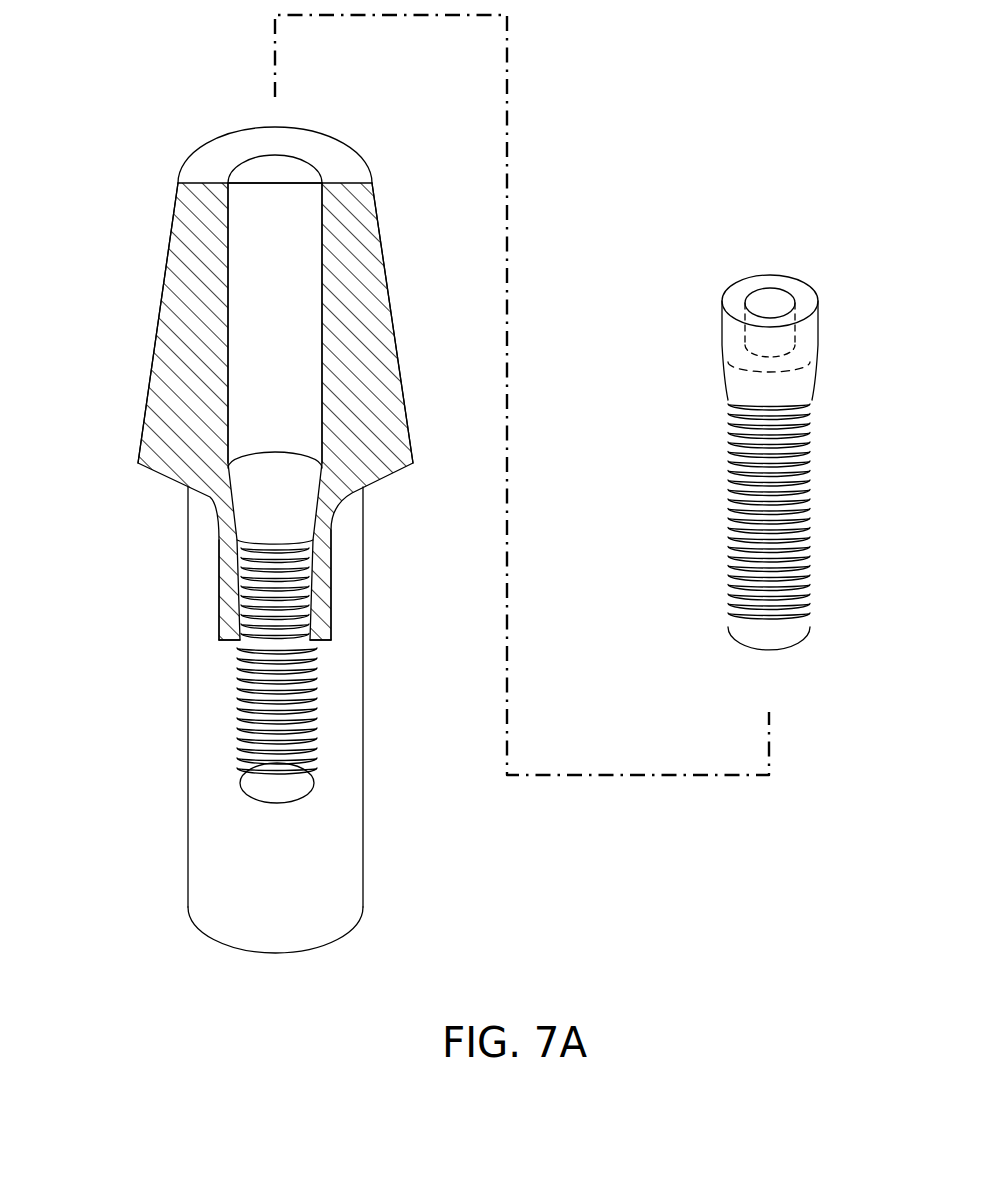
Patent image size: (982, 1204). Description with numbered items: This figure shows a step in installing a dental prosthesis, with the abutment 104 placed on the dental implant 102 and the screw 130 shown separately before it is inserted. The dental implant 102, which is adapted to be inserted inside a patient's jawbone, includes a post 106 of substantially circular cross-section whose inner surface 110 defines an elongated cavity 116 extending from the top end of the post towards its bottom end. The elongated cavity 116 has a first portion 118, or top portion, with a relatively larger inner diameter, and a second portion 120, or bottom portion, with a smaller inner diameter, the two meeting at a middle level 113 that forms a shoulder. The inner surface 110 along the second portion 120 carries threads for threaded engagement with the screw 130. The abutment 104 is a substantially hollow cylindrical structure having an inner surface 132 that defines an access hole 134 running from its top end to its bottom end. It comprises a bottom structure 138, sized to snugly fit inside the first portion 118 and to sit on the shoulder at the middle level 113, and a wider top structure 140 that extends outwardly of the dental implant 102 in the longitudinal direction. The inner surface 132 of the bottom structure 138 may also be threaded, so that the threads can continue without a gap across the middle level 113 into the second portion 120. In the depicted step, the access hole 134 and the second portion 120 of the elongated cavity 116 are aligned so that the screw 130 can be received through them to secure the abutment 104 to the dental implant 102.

The dental implant 102 is at (249, 720).
The abutment 104 is at (255, 383).
The post 106 is at (330, 896).
The inner surface 110 is at (255, 772).
The middle level 113 is at (222, 640).
The elongated cavity 116 is at (246, 682).
The first portion 118 is at (120, 527).
The second portion 120 is at (178, 673).
The screw 130 is at (800, 622).
The inner surface 132 is at (320, 275).
The access hole 134 is at (290, 329).
The bottom structure 138 is at (215, 513).
The top structure 140 is at (196, 352).